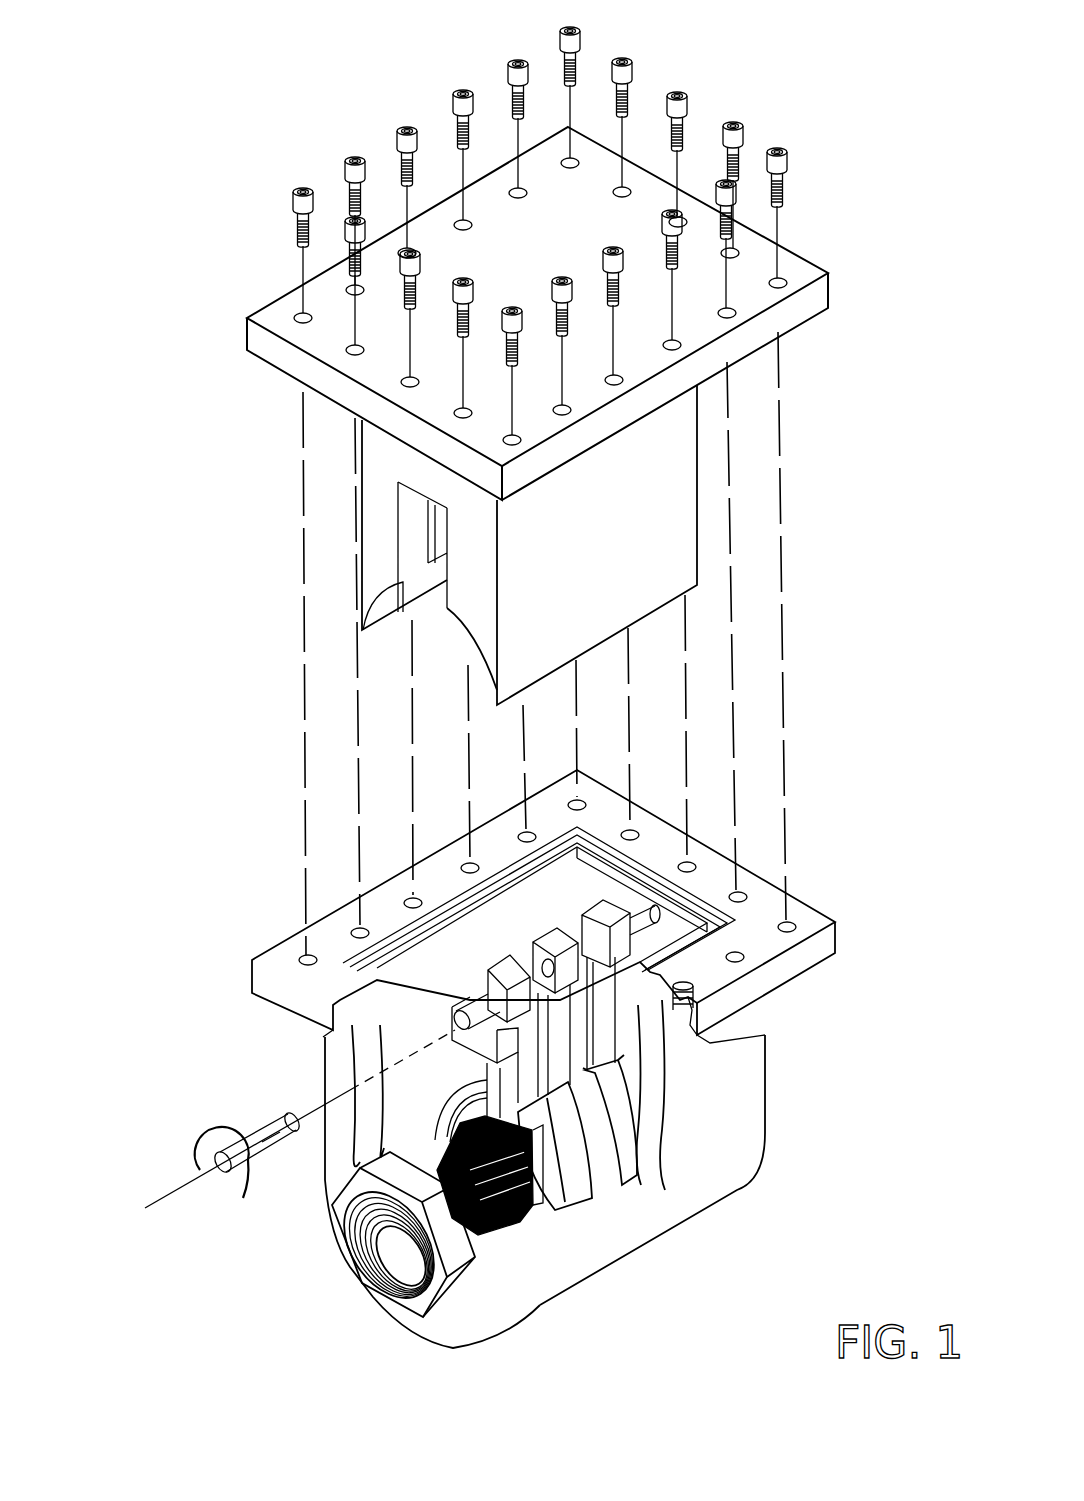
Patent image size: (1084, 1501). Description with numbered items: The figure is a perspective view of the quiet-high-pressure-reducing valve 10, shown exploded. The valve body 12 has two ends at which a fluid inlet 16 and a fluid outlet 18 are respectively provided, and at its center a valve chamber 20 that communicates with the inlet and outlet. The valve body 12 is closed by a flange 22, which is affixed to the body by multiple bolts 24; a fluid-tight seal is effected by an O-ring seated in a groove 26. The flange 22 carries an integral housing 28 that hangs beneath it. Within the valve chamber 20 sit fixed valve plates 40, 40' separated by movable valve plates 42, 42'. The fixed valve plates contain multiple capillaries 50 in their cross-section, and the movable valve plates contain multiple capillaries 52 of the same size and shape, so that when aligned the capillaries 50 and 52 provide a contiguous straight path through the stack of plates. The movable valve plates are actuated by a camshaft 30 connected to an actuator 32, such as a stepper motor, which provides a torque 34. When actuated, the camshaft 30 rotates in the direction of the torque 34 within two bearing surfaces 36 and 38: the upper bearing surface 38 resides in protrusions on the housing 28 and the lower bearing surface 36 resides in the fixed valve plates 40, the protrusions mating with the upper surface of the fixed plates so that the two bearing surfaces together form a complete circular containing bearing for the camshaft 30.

The quiet-high-pressure-reducing valve 10 is at (783, 1162).
The valve body 12 is at (733, 1100).
The fluid inlet 16 is at (378, 1258).
The fluid outlet 18 is at (782, 1025).
The valve chamber 20 is at (556, 887).
The flange 22 is at (820, 297).
The bolts 24 is at (787, 172).
The groove 26 is at (692, 886).
The housing 28 is at (672, 468).
The camshaft 30 is at (490, 993).
The actuator 32 is at (145, 1208).
The torque 34 is at (243, 1198).
The lower bearing surface 36 is at (453, 1003).
The upper bearing surface 38 is at (416, 494).
The fixed valve plates 40 is at (590, 1206).
The fixed valve plate 40' is at (672, 1180).
The movable valve plates 42 is at (667, 1196).
The movable valve plate 42' is at (706, 1172).
The capillaries of fixed valve plates 50 is at (500, 1265).
The capillaries of movable valve plates 52 is at (553, 1226).